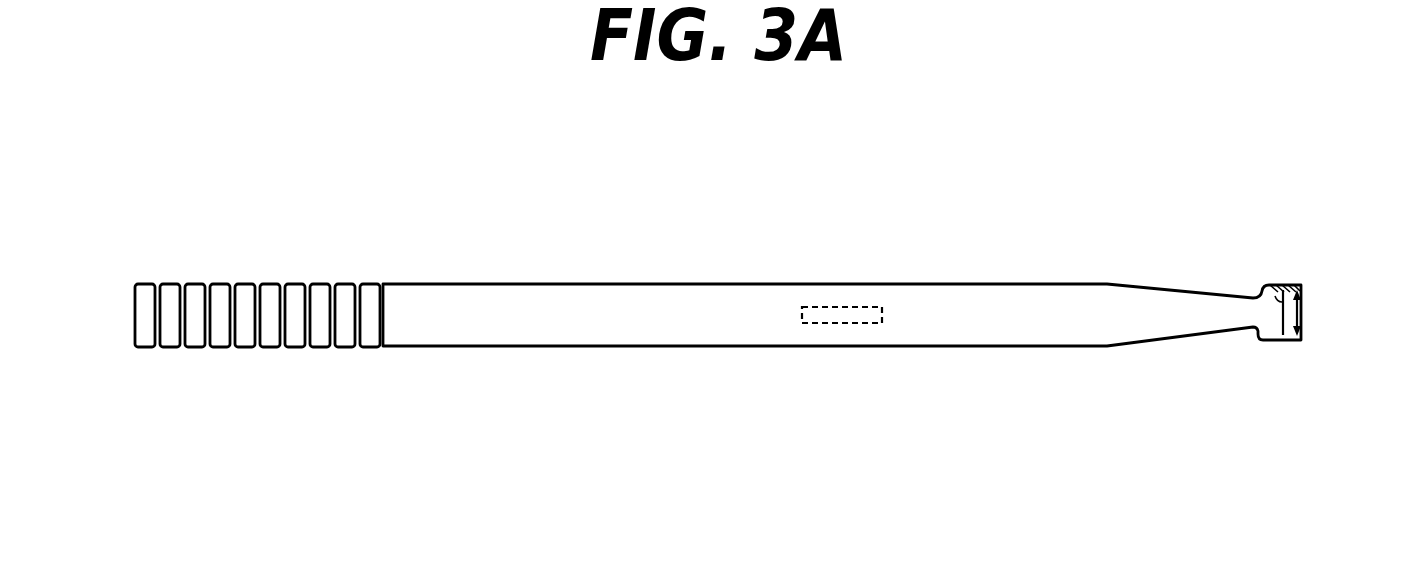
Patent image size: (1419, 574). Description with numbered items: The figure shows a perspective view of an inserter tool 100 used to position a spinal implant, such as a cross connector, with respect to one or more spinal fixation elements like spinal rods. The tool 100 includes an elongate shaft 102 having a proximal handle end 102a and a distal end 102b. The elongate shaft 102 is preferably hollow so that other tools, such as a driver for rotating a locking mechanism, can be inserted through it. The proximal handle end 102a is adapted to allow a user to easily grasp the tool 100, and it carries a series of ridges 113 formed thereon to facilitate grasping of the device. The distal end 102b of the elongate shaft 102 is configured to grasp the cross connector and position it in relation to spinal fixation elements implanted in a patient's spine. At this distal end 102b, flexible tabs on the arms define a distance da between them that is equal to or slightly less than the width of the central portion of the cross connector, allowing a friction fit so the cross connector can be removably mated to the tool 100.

The inserter tool 100 is at (932, 198).
The elongate shaft 102 is at (613, 329).
The proximal handle end 102a is at (150, 358).
The distal end 102b is at (1257, 358).
The ribs / grip elements 113 is at (218, 293).
The distance da is at (1302, 311).